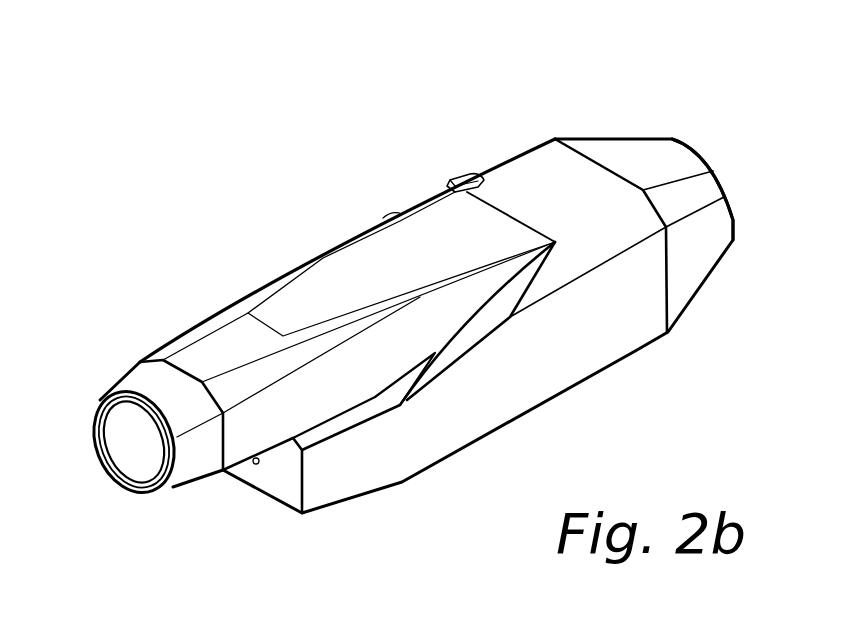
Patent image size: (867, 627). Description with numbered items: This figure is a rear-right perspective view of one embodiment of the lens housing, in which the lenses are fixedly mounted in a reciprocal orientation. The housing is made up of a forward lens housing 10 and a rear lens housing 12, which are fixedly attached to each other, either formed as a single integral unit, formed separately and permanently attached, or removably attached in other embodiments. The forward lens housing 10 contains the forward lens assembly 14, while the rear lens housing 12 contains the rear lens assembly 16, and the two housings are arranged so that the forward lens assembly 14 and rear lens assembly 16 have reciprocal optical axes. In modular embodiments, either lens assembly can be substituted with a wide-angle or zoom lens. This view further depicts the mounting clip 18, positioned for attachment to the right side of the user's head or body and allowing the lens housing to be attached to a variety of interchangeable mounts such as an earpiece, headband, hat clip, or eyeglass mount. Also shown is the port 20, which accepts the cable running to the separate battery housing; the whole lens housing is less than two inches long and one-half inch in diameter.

The forward lens housing 10 is at (553, 393).
The rear lens housing 12 is at (240, 298).
The forward lens assembly 14 is at (736, 198).
The rear lens assembly 16 is at (129, 447).
The mounting clip 18 is at (455, 175).
The port 20 is at (255, 464).